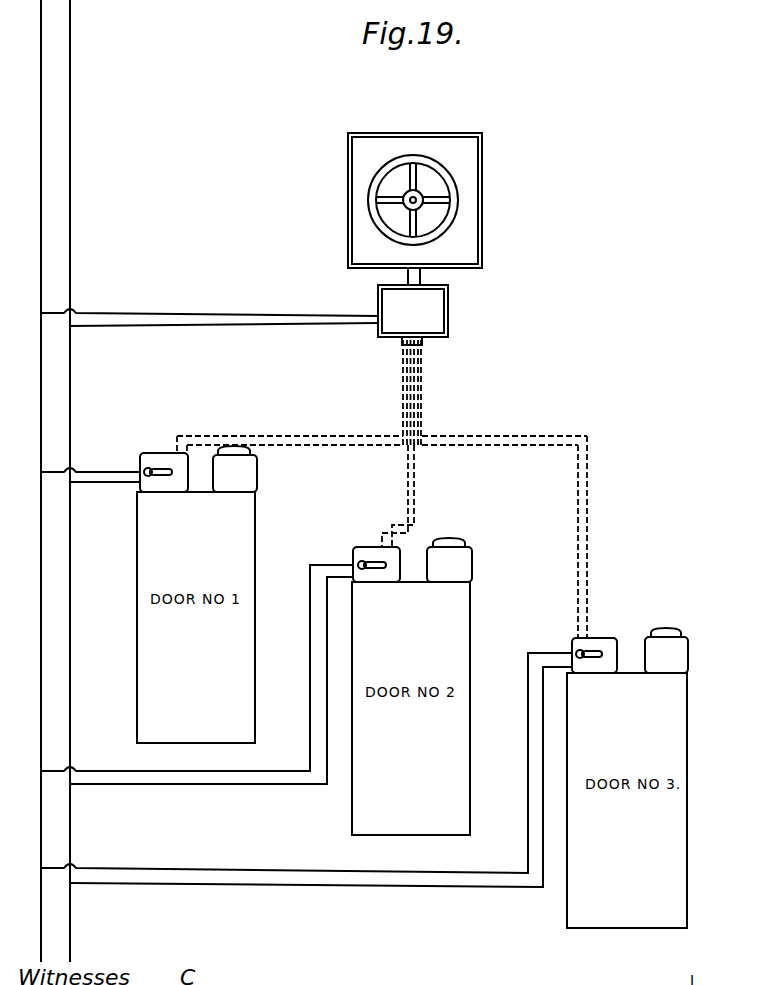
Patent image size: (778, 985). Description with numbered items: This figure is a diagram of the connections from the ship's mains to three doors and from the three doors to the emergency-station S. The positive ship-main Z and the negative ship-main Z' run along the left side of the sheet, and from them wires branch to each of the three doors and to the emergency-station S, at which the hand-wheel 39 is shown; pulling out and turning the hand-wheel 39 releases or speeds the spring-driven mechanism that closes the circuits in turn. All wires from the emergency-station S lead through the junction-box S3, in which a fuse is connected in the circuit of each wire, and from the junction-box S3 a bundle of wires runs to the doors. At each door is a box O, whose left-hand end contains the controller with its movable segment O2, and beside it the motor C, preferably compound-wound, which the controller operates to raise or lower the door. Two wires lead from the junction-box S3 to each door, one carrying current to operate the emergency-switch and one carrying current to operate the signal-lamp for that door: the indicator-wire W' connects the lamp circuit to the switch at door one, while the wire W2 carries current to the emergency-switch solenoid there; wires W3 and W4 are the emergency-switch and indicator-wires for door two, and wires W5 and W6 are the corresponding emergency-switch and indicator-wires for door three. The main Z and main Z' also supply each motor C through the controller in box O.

The hand-wheel 39 is at (428, 159).
The emergency-station S is at (482, 208).
The junction-box S3 is at (438, 307).
The positive ship-main Z is at (86, 481).
The negative ship-main Z' is at (30, 481).
The indicator-wire W' is at (314, 377).
The emergency-switch wire W2 is at (323, 447).
The emergency-switch wire W3 is at (406, 502).
The indicator-wire W4 is at (416, 490).
The emergency-switch wire W5 is at (577, 502).
The indicator-wire W6 is at (587, 536).
The box O is at (141, 453).
The movable segment O2 is at (590, 688).
The motor C is at (247, 478).